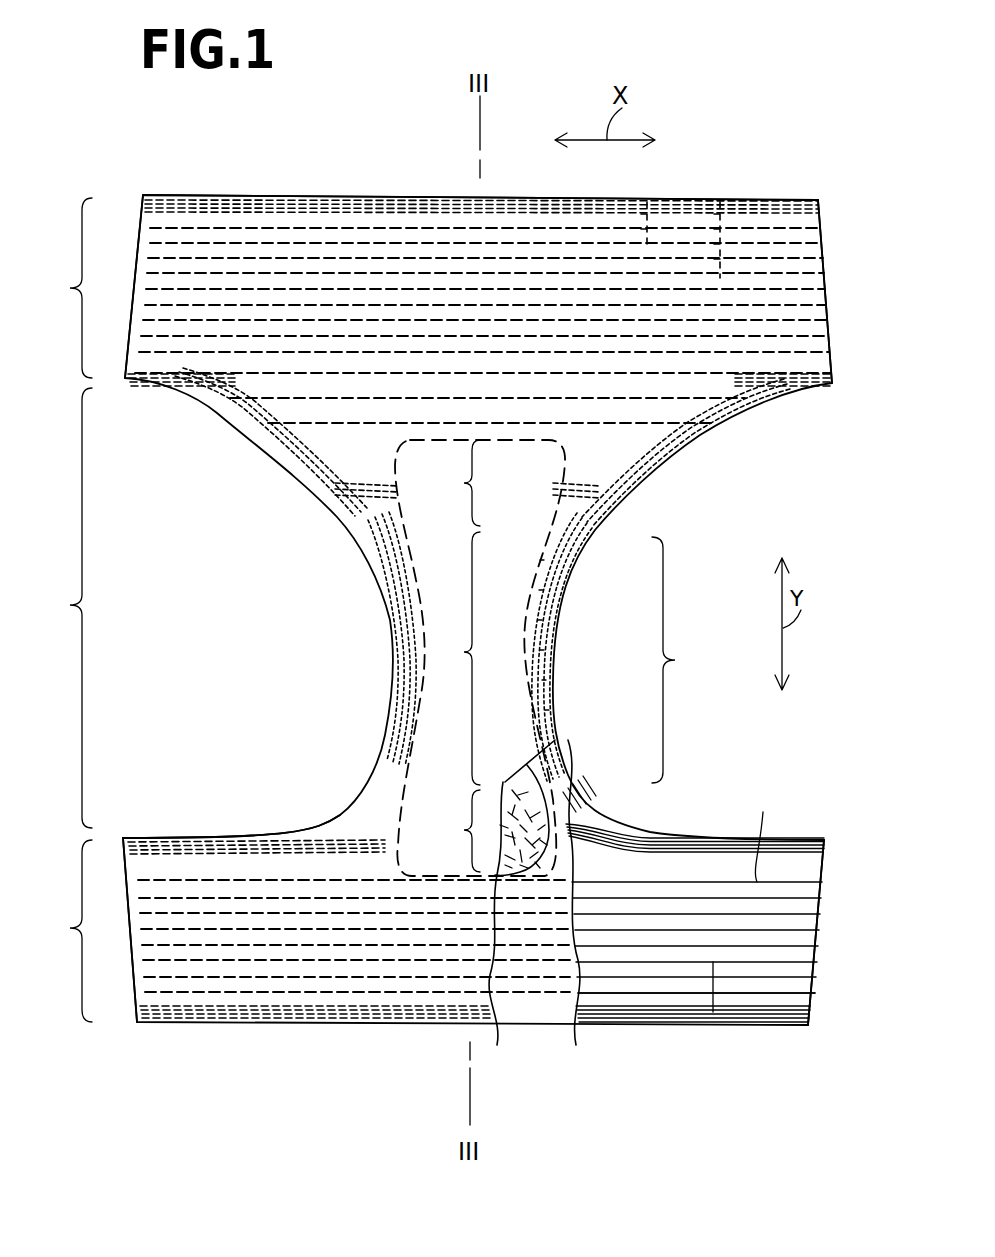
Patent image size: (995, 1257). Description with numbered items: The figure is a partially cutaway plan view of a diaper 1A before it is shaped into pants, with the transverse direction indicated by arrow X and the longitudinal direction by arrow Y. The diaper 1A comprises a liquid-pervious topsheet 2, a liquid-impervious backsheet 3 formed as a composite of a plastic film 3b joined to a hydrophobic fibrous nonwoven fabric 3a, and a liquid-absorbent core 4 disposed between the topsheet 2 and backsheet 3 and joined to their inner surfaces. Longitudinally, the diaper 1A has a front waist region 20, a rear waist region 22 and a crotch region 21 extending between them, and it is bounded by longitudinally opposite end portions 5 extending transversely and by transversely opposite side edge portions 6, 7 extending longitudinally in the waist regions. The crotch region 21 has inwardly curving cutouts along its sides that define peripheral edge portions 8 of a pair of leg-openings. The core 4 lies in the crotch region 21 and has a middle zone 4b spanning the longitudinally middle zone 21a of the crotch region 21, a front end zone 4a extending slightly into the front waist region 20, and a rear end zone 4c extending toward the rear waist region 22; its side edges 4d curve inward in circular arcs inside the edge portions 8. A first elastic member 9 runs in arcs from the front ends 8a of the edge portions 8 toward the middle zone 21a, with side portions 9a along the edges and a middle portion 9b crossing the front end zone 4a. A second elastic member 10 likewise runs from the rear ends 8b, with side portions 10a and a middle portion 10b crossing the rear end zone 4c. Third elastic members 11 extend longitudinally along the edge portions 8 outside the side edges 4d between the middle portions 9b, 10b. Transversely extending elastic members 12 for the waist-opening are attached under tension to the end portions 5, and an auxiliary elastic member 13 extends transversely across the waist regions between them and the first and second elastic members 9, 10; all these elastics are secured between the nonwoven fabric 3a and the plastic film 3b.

The diaper 1A is at (772, 112).
The topsheet 2 is at (345, 850).
The backsheet 3 is at (546, 1035).
The fibrous nonwoven fabric 3a is at (512, 1035).
The plastic film 3b is at (815, 1005).
The absorbent core 4 is at (523, 788).
The front end zone 4a is at (454, 831).
The middle zone 4b is at (368, 625).
The rear end zone 4c is at (454, 483).
The side edges 4d is at (530, 682).
The end portions 5 is at (315, 212).
The side edge portion 6 is at (140, 942).
The side edge portion 7 is at (148, 247).
The peripheral edge portions 8 is at (572, 548).
The front ends 8a is at (124, 838).
The rear ends 8b is at (125, 380).
The first elastic member 9 is at (797, 845).
The side portions 9a is at (212, 838).
The middle portion 9b is at (593, 834).
The second elastic member 10 is at (778, 395).
The side portions 10a is at (260, 445).
The middle portion 10b is at (578, 470).
The third elastic members 11 is at (362, 558).
The elastic members 12 is at (411, 190).
The auxiliary elastic member 13 is at (653, 197).
The front waist region 20 is at (62, 931).
The crotch region 21 is at (62, 608).
The middle zone 21a is at (690, 660).
The rear waist region 22 is at (62, 288).